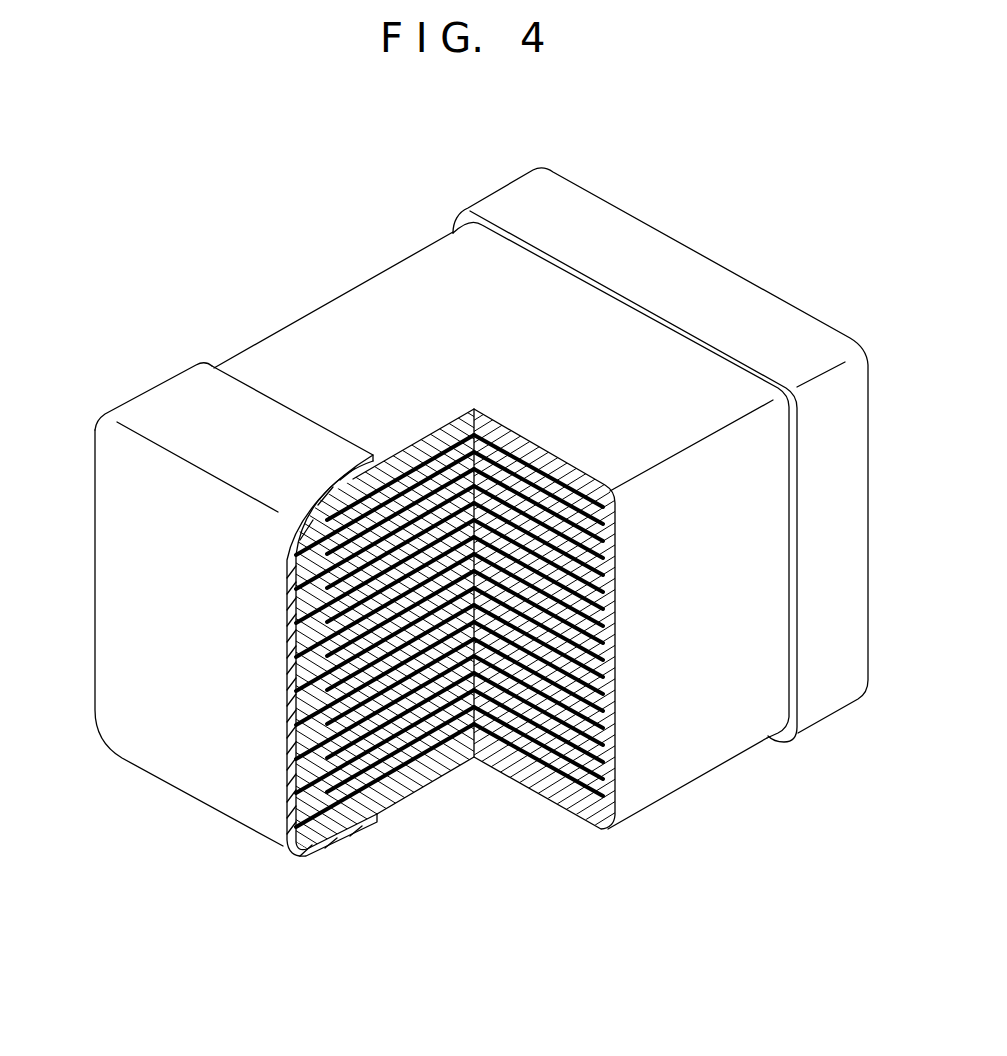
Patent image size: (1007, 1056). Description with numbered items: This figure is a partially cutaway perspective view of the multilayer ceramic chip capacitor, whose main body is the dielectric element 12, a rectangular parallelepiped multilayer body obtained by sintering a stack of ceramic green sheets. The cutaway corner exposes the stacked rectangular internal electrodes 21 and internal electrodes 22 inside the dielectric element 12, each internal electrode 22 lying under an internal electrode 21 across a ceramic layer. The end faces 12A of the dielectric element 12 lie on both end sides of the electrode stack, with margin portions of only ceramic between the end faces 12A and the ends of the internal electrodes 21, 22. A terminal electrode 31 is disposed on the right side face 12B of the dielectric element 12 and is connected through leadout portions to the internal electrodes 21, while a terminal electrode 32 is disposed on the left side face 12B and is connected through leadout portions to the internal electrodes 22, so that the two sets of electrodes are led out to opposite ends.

The dielectric element 12 is at (410, 283).
The end face 12A is at (302, 320).
The side face 12B is at (285, 752).
The internal electrode 21 is at (290, 660).
The internal electrode 22 is at (325, 557).
The terminal electrode 31 is at (677, 240).
The terminal electrode 32 is at (135, 545).